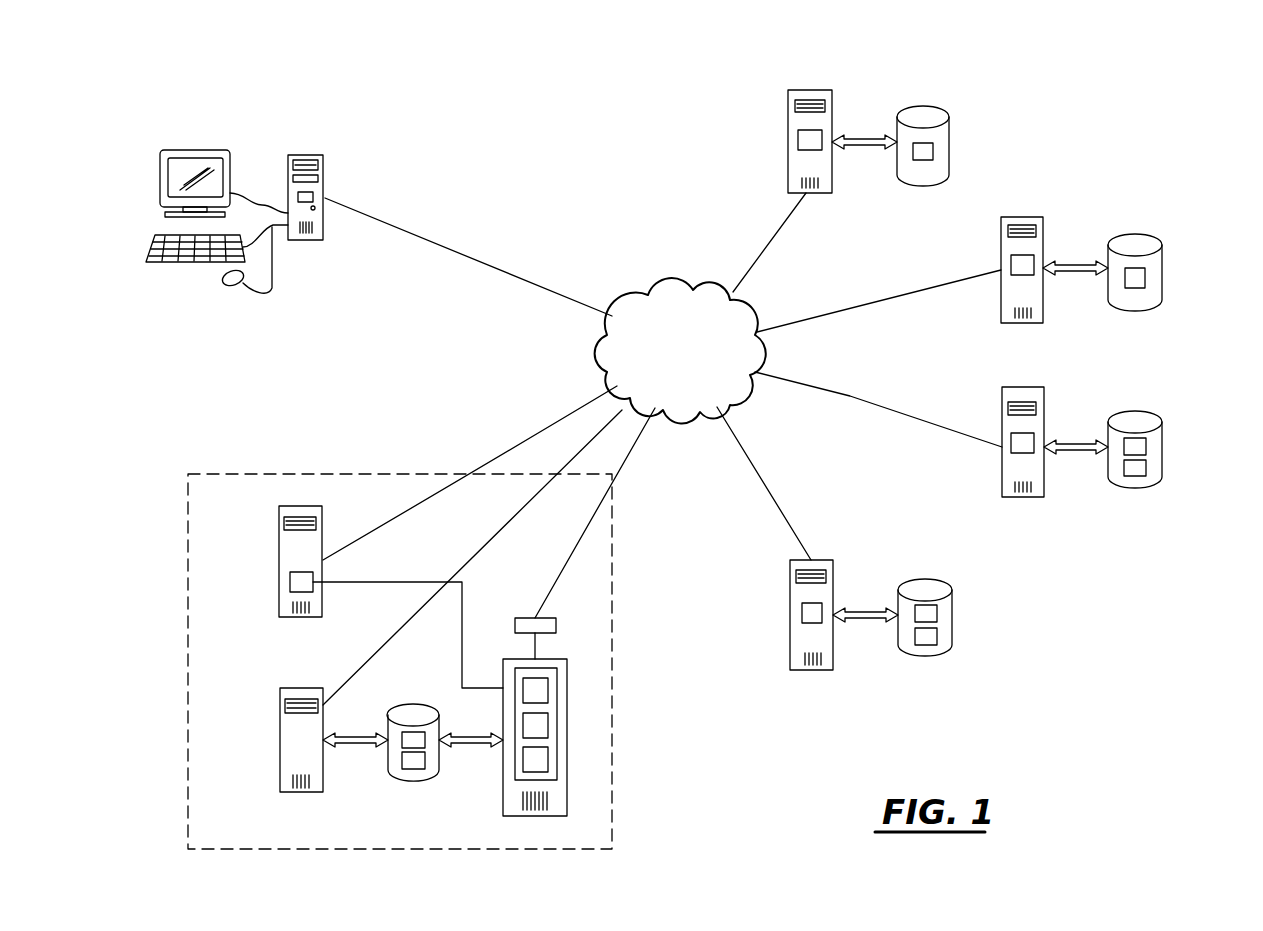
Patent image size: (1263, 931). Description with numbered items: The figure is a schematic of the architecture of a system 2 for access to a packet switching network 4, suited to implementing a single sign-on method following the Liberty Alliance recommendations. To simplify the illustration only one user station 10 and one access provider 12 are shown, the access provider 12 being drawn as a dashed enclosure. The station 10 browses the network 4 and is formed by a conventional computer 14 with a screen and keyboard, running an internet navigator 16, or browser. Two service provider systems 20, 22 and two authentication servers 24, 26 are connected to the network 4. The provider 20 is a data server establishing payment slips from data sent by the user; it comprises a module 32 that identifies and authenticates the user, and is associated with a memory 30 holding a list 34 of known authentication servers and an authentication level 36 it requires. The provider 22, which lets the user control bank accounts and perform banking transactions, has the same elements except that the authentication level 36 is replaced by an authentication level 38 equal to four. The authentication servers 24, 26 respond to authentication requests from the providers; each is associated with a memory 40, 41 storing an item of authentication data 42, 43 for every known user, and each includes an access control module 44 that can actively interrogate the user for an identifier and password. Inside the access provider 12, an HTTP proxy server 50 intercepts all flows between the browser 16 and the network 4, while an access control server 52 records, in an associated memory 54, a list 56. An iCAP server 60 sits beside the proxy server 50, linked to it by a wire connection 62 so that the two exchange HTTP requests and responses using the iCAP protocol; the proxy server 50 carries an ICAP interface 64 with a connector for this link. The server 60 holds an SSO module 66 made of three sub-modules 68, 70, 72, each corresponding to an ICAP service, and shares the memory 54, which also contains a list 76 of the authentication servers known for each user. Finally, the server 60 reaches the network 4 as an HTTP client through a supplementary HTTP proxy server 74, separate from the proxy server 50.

The system 2 is at (547, 160).
The packet switching network 4 is at (680, 350).
The user station 10 is at (128, 137).
The access provider 12 is at (188, 473).
The computer 14 is at (330, 238).
The internet navigator 16 is at (298, 195).
The service provider system 20 is at (791, 672).
The service provider system 22 is at (1047, 500).
The authentication server 24 is at (790, 95).
The authentication server 26 is at (1025, 217).
The memory 30 is at (1132, 420).
The module 32 is at (1020, 450).
The list of known authentication servers 34 is at (1140, 447).
The authentication level 36 is at (937, 633).
The authentication level 38 is at (1147, 465).
The memory 40 is at (951, 112).
The memory 41 is at (1166, 242).
The item of authentication data 42 is at (930, 153).
The item of authentication data 43 is at (1140, 280).
The access control module 44 is at (797, 133).
The HTTP proxy server 50 is at (279, 619).
The access control server 52 is at (279, 749).
The memory 54 is at (426, 776).
The list 56 is at (413, 765).
The iCAP server 60 is at (536, 819).
The wire connection 62 is at (356, 583).
The ICAP interface 64 is at (290, 578).
The SSO module 66 is at (504, 761).
The sub-module 68 is at (542, 693).
The sub-module 70 is at (542, 727).
The sub-module 72 is at (542, 762).
The supplementary HTTP proxy server 74 is at (520, 625).
The list of known authentication servers 76 is at (410, 738).